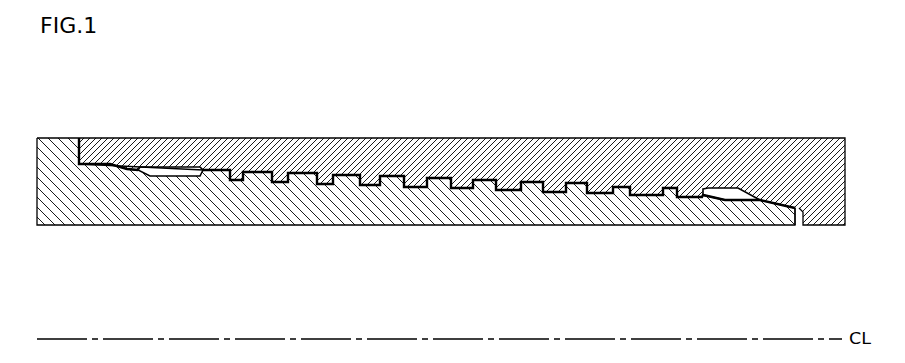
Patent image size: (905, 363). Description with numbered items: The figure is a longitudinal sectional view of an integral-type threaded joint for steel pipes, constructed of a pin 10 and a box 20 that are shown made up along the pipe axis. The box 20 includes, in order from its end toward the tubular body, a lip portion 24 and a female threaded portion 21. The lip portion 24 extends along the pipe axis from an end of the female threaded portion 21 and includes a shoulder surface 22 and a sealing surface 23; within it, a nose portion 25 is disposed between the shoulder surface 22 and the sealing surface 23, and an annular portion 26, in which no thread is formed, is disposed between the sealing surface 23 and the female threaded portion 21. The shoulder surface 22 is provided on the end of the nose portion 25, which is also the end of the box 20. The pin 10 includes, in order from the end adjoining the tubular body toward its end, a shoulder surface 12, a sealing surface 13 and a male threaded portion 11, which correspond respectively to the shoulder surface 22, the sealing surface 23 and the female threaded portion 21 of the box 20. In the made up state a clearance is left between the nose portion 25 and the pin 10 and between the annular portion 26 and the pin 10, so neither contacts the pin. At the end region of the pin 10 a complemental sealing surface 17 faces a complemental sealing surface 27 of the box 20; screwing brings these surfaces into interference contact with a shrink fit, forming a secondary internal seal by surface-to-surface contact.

The pin 10 is at (101, 232).
The male threaded portion 11 is at (484, 191).
The shoulder surface 12 is at (76, 150).
The sealing surface 13 is at (129, 172).
The complemental sealing surface 17 is at (766, 228).
The box 20 is at (788, 132).
The female threaded portion 21 is at (463, 185).
The shoulder surface 22 is at (87, 161).
The sealing surface 23 is at (128, 168).
The lip portion 24 is at (92, 73).
The nose portion 25 is at (97, 163).
The annular portion 26 is at (174, 166).
The complemental sealing surface 27 is at (764, 238).